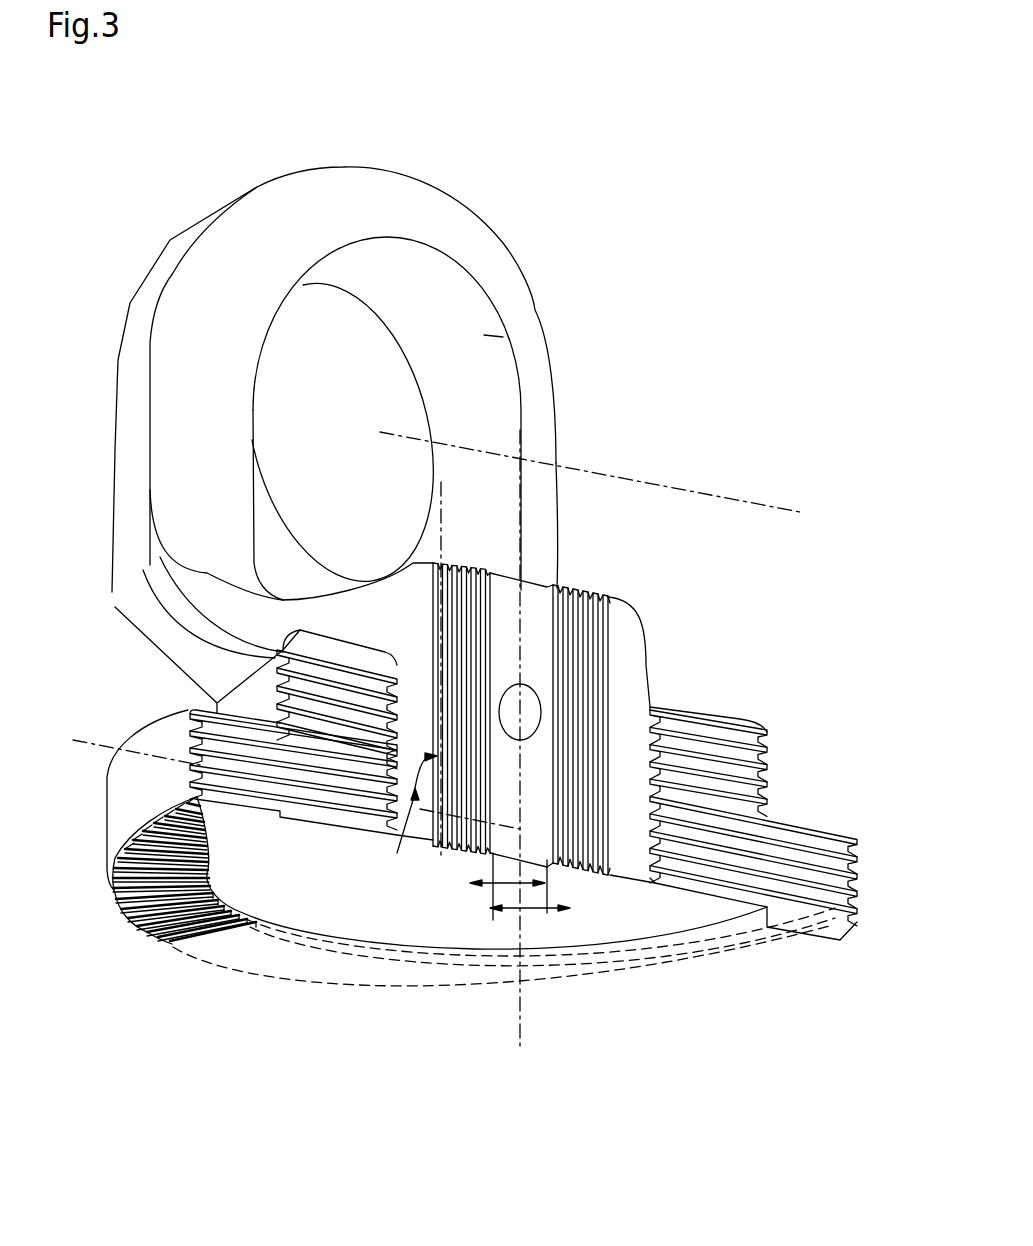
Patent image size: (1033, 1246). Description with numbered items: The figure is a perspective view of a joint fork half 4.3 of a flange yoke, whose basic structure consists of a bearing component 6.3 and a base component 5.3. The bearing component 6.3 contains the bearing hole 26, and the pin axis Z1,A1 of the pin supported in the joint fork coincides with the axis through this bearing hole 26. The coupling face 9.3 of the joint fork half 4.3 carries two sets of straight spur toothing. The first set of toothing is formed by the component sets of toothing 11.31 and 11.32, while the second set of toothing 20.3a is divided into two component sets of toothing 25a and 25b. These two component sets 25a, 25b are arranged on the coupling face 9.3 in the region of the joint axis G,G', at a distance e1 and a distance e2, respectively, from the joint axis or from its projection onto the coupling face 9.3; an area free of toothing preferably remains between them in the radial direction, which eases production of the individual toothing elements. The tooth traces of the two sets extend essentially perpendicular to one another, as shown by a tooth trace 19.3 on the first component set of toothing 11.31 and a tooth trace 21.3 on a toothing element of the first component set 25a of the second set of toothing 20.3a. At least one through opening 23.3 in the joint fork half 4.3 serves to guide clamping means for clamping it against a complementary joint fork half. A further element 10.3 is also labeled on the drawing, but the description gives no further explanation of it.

The joint fork half 4.3 is at (409, 440).
The bearing hole 26 is at (497, 338).
The bearing component 6.3 is at (553, 390).
The pin axis / axis of the bearing hole Z1,A1 is at (722, 496).
The tooth trace 21.3 is at (441, 503).
The second set of toothing 20.3a is at (450, 779).
The through opening 23.3 is at (538, 686).
The coupling face 9.3 is at (741, 704).
The top face of block 10.3 is at (764, 700).
The base component 5.3 is at (769, 834).
The tooth trace 19.3 is at (100, 742).
The distance e1 is at (503, 886).
The distance e2 is at (530, 903).
The first component set of toothing of the first set of toothing 11.31 is at (322, 852).
The first component set of toothing 25a is at (431, 866).
The second component set of toothing 25b is at (594, 893).
The second component set of toothing of the first set of toothing 11.32 is at (823, 897).
The joint axis / projected joint fork axis G,G' is at (565, 768).